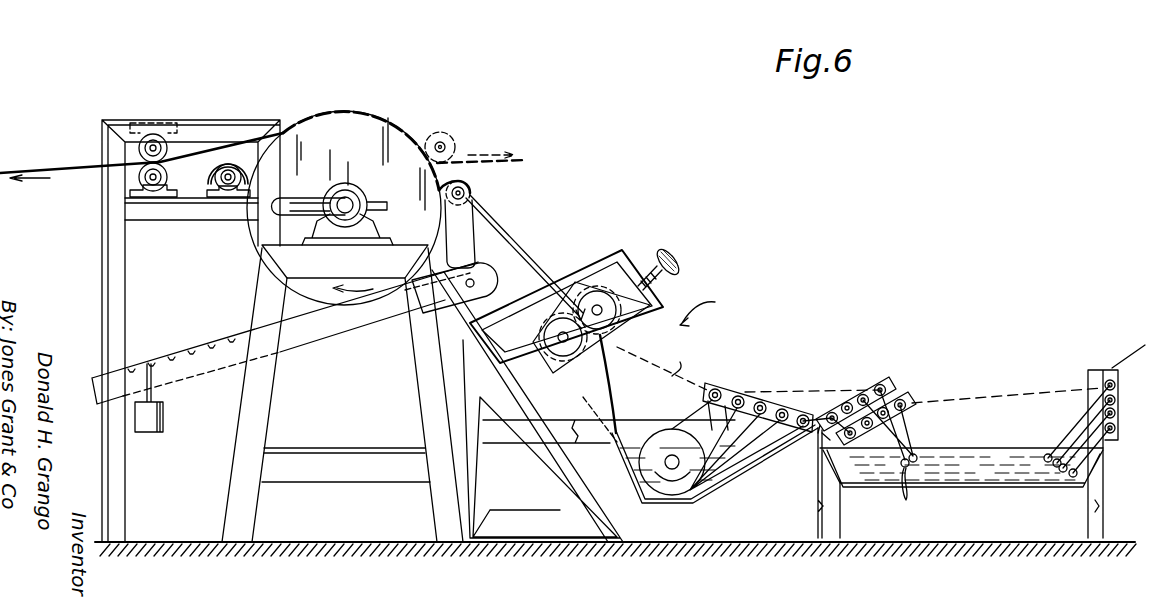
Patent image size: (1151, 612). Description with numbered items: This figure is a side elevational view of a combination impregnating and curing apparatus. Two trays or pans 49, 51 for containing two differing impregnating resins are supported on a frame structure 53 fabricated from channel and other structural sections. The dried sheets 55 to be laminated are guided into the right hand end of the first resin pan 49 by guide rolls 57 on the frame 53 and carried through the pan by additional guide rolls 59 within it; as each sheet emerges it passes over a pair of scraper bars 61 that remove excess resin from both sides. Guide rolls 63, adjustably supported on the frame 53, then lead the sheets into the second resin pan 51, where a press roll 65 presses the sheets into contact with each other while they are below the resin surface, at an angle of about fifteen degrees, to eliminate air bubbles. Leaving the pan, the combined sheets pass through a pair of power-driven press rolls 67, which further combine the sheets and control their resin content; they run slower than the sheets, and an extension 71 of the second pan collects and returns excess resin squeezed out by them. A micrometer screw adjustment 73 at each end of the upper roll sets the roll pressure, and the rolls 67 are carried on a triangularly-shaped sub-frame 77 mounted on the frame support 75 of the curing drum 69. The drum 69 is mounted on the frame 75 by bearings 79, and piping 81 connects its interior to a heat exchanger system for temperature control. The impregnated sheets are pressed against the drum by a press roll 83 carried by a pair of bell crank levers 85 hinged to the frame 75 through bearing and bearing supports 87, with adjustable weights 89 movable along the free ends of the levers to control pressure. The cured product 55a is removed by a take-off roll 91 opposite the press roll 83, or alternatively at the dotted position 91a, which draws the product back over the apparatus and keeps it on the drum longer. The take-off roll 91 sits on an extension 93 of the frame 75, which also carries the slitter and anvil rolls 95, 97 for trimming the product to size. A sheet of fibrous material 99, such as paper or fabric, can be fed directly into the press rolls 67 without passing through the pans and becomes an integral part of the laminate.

The first resin pan 49 is at (972, 484).
The second resin pan 51 is at (757, 470).
The frame structure 53 is at (838, 526).
The sheets 55 is at (770, 420).
The cured sheet product 55a is at (12, 161).
The guide rolls 57 is at (1088, 407).
The guide rolls 59 is at (908, 478).
The scraper bars 61 is at (866, 397).
The guide rolls 63 is at (762, 407).
The press roll 65 is at (673, 436).
The power-driven press rolls 67 is at (573, 264).
The curing drum 69 is at (393, 119).
The extension 71 is at (612, 399).
The micrometer screw adjustment 73 is at (650, 258).
The frame support 75 is at (272, 404).
The triangularly-shaped sub-frame 77 is at (542, 481).
The bearings 79 is at (368, 200).
The piping 81 is at (293, 198).
The press roll 83 is at (473, 189).
The bell crank levers 85 is at (376, 322).
The bearing and bearing supports 87 is at (487, 280).
The adjustable weights 89 is at (168, 420).
The take-off roll 91 is at (236, 167).
The take-off roll alternate position 91a is at (455, 140).
The frame extension 93 is at (134, 266).
The slitter roll 95 is at (168, 180).
The anvil roll 97 is at (163, 140).
The sheet of fibrous material 99 is at (985, 396).